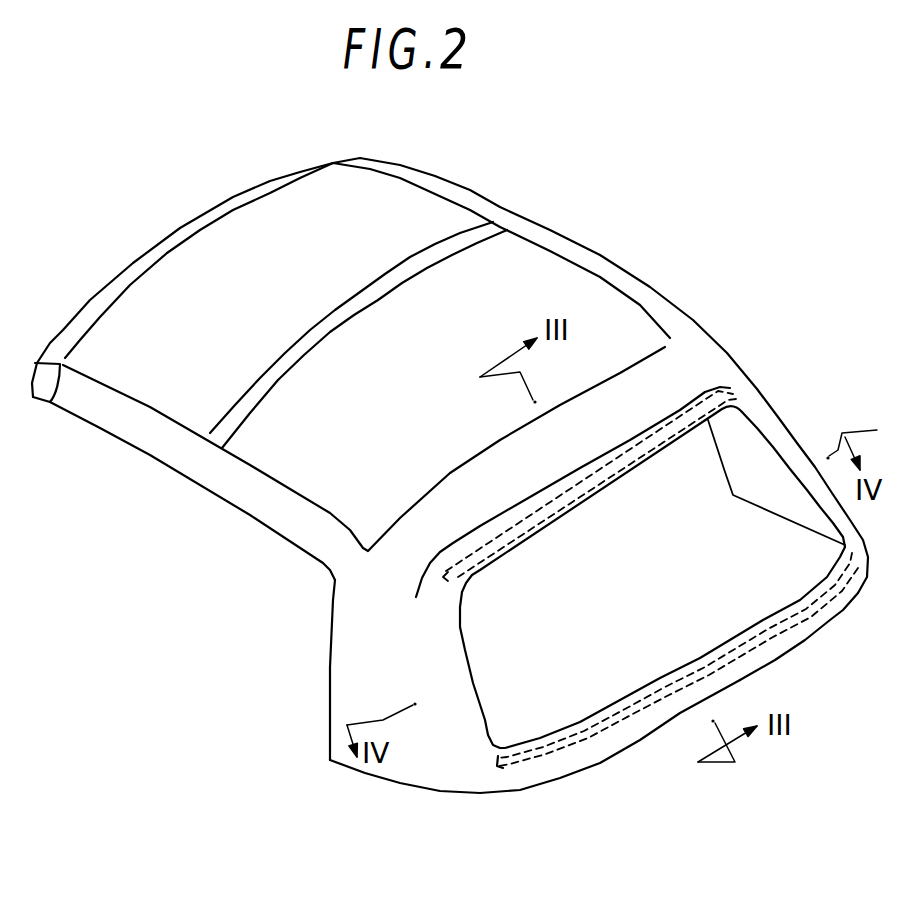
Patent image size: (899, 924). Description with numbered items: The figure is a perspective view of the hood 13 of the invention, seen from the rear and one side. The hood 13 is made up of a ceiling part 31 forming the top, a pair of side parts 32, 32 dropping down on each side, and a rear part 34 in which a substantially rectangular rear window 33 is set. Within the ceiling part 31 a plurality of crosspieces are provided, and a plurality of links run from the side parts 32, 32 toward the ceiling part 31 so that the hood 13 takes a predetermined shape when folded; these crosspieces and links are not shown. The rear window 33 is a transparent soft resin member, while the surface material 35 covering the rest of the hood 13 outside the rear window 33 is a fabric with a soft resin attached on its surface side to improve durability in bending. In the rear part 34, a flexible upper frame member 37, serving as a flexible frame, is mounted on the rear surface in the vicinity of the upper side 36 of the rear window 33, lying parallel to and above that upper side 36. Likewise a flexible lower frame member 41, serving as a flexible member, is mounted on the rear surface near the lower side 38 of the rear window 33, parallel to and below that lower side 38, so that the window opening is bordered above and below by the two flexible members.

The hood 13 is at (752, 270).
The ceiling part 31 is at (532, 212).
The side parts 32 is at (723, 473).
The rear window 33 is at (618, 668).
The rear part 34 is at (593, 745).
The surface material 35 is at (435, 745).
The upper side 36 is at (583, 503).
The flexible upper frame member 37 is at (472, 573).
The lower side 38 is at (743, 630).
The flexible lower frame member 41 is at (500, 748).